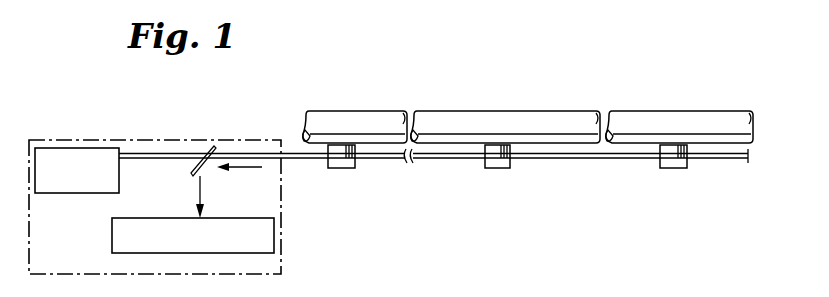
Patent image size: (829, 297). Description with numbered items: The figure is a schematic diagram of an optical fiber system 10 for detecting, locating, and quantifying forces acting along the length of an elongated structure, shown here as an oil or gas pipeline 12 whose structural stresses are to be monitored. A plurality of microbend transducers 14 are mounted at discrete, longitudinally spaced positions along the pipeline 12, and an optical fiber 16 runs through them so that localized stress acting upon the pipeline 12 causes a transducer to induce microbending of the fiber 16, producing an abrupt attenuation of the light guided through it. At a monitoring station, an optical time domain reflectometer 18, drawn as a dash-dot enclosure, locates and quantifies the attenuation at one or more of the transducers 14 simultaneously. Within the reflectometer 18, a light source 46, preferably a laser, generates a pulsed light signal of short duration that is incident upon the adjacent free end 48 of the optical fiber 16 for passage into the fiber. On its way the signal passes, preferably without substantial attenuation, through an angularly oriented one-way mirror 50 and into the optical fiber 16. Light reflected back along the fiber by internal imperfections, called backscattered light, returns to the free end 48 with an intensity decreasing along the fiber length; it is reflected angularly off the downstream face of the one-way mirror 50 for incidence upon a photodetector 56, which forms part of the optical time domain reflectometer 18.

The optical fiber system 10 is at (325, 78).
The pipeline 12 is at (527, 121).
The microbend transducer 14 is at (345, 170).
The optical fiber 16 is at (460, 161).
The optical time domain reflectometer 18 is at (281, 274).
The light source 46 is at (56, 192).
The free end 48 is at (233, 152).
The one-way mirror 50 is at (212, 150).
The photodetector 56 is at (227, 218).